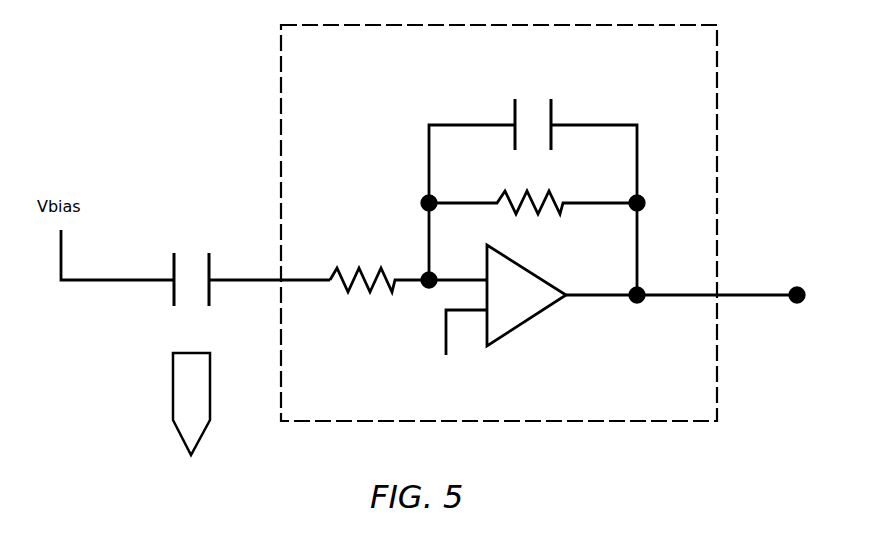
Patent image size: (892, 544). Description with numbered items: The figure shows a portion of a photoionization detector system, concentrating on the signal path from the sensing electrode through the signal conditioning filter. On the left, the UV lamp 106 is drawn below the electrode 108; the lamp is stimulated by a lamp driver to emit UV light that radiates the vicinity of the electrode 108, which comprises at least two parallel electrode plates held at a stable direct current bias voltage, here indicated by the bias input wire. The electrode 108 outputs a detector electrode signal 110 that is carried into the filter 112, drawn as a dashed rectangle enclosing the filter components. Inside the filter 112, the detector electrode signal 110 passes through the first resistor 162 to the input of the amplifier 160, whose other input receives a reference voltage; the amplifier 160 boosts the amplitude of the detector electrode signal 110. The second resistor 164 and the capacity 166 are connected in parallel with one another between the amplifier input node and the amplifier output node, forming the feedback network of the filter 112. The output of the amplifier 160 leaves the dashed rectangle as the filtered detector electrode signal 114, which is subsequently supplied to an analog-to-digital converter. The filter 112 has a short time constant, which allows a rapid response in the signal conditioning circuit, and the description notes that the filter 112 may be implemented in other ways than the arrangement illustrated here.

The ultraviolet lamp 106 is at (173, 380).
The electrode 108 is at (190, 250).
The detector electrode signal 110 is at (249, 286).
The filter 112 is at (719, 128).
The filtered detector electrode signal 114 is at (754, 299).
The amplifier 160 is at (526, 325).
The first resistor 162 is at (364, 290).
The second resistor 164 is at (542, 208).
The capacity 166 is at (535, 95).